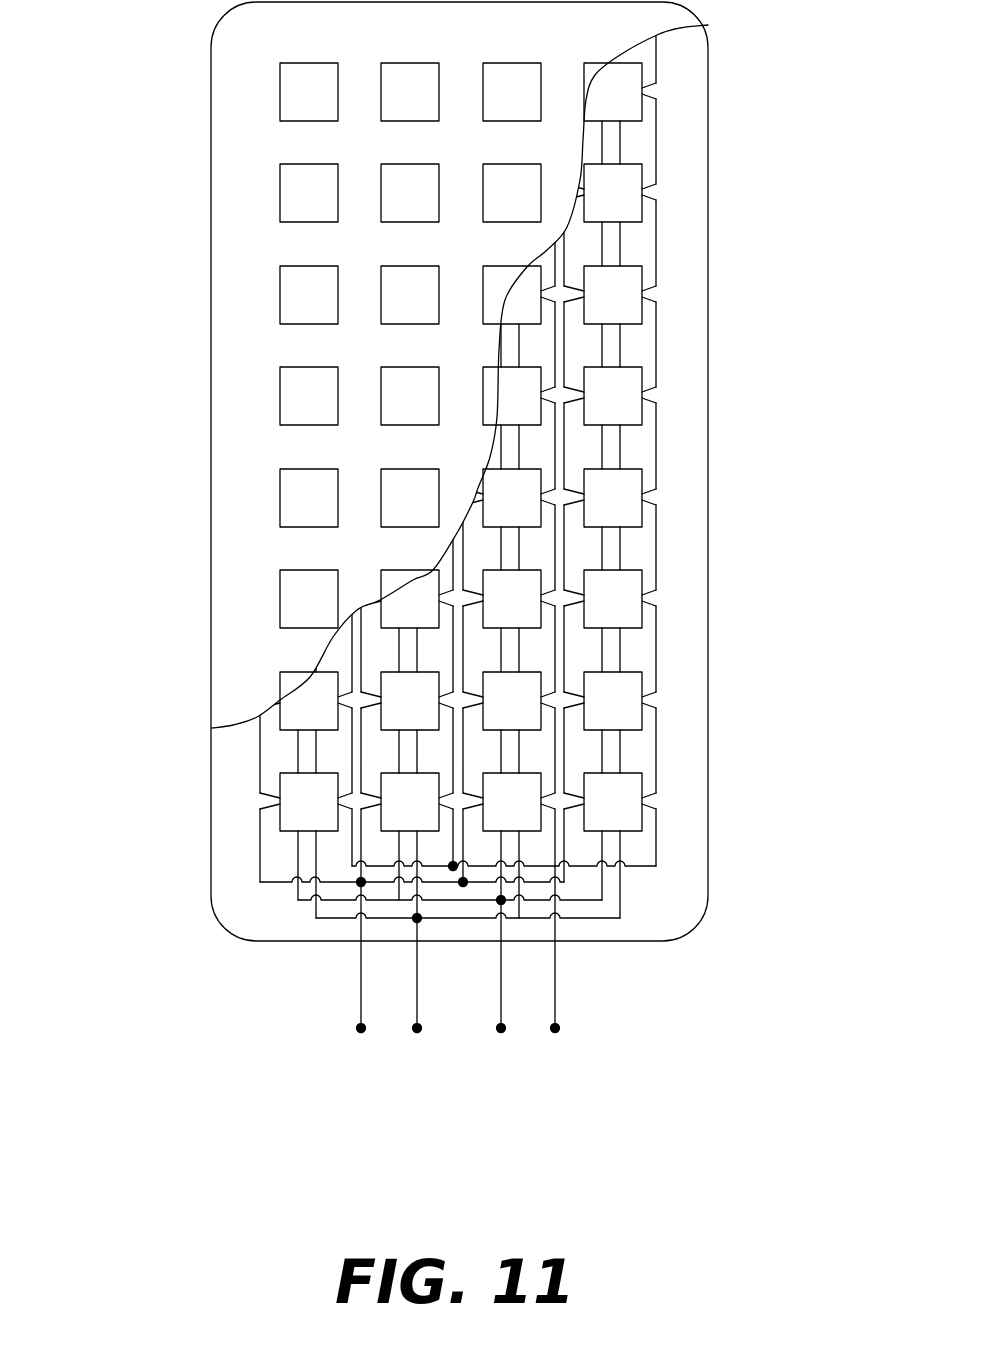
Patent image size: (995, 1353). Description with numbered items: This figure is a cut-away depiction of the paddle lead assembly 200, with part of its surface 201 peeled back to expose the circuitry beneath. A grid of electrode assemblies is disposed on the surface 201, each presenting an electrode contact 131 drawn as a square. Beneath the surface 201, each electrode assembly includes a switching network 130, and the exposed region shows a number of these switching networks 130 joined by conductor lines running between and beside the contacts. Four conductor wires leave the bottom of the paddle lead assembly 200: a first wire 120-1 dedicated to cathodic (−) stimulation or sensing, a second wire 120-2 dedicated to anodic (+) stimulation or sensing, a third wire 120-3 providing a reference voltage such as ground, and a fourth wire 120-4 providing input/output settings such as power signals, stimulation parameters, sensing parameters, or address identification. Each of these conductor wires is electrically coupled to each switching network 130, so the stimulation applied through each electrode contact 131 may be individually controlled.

The paddle lead assembly 200 is at (708, 282).
The surface 201 is at (250, 495).
The electrode contact 131 is at (280, 79).
The switching network 130 is at (615, 792).
The first wire 120-1 is at (361, 1013).
The second wire 120-2 is at (417, 1000).
The fourth wire 120-4 is at (501, 1012).
The third wire 120-3 is at (555, 1008).